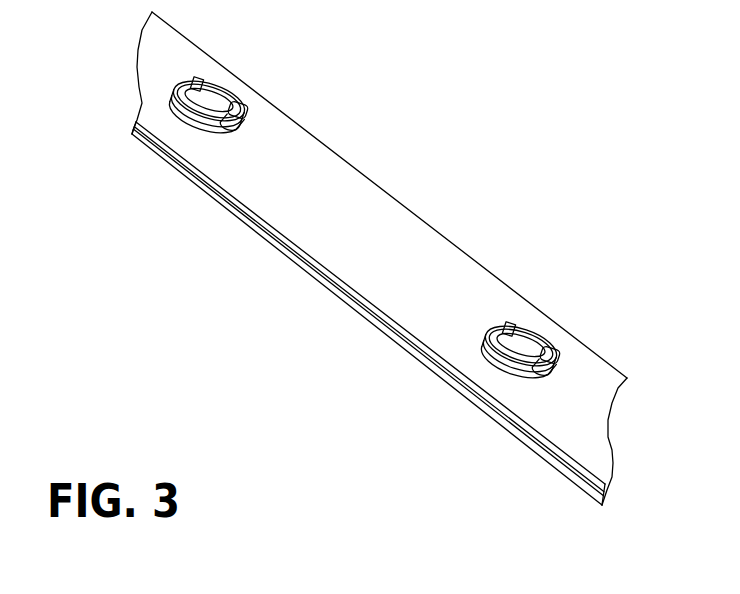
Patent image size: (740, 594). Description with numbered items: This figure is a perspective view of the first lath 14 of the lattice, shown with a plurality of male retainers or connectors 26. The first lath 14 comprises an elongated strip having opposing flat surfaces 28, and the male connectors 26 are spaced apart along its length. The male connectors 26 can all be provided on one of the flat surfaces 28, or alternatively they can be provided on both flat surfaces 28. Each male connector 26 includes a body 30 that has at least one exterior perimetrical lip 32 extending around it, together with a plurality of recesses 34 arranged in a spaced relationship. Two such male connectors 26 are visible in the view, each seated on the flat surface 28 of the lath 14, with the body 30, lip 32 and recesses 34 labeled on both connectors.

The first lath 14 is at (387, 145).
The male connector 26 is at (224, 77).
The flat surface 28 is at (357, 262).
The body 30 is at (190, 114).
The exterior perimetrical lip 32 is at (252, 107).
The recess 34 is at (220, 133).